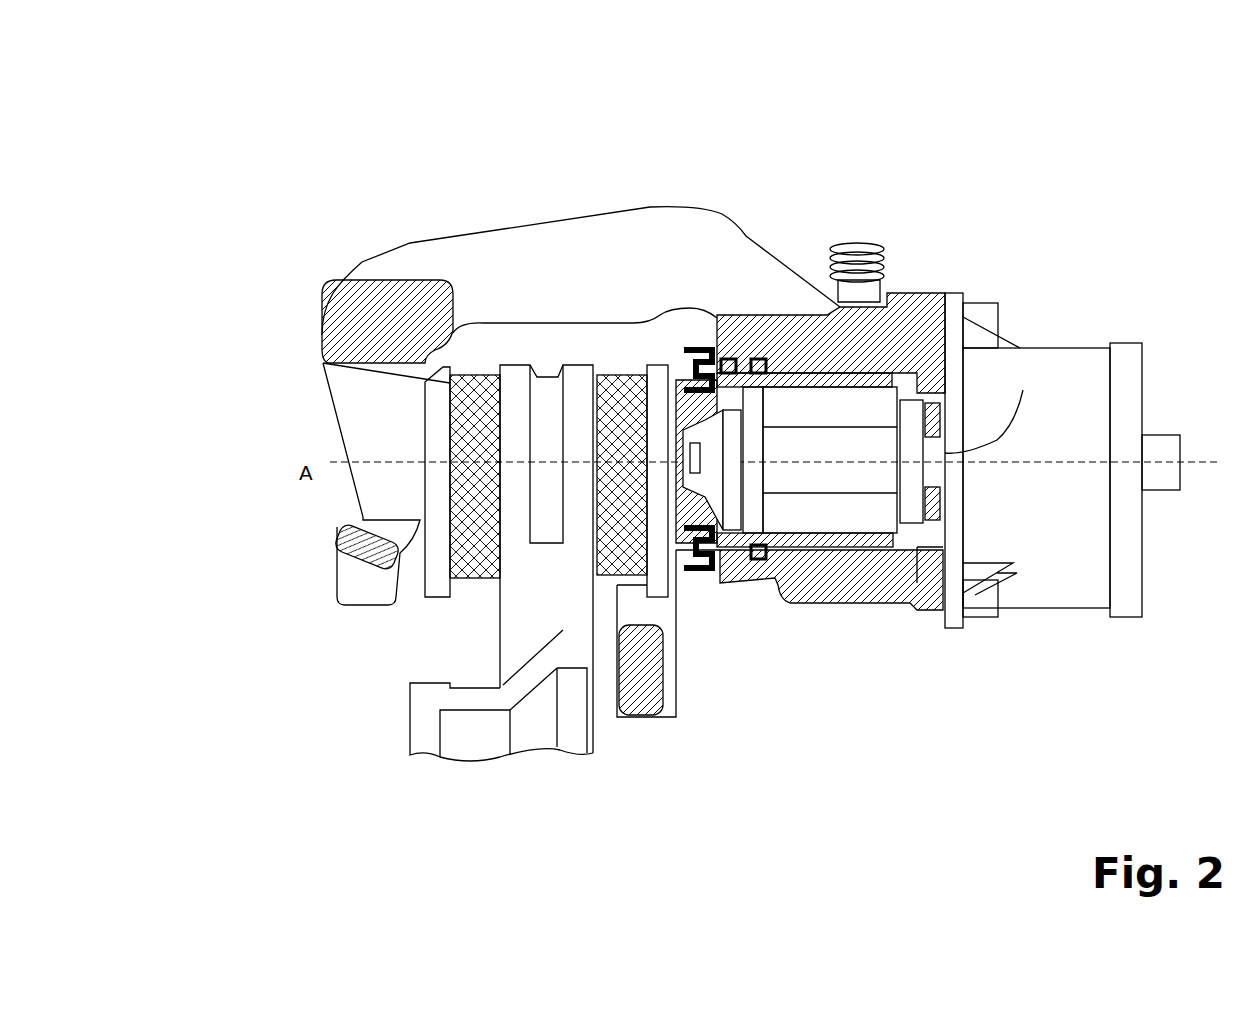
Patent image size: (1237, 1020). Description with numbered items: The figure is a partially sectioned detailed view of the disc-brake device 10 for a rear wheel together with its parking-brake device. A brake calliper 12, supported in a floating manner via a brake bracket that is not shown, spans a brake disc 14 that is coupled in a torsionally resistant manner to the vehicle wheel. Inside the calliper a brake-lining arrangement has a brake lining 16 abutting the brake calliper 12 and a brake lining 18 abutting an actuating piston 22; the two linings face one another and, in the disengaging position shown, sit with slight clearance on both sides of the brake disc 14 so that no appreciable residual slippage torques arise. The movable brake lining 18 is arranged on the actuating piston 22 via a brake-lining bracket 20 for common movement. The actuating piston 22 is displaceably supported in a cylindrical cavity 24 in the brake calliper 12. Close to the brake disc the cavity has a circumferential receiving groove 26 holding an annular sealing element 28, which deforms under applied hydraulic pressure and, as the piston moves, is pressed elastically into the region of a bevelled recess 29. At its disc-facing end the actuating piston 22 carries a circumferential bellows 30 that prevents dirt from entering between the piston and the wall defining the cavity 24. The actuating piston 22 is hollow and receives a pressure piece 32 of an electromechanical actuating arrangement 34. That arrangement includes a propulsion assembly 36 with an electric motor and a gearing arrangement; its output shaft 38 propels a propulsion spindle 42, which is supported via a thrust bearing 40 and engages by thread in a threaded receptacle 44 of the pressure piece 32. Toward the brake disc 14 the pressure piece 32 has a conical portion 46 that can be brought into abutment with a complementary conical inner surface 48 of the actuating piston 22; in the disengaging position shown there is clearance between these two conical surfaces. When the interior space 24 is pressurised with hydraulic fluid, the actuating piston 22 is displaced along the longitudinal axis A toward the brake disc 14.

The disc-brake device 10 is at (1022, 217).
The brake calliper 12 is at (497, 250).
The brake disc 14 is at (505, 615).
The brake lining 16 is at (323, 363).
The brake lining 18 is at (612, 375).
The brake-lining bracket 20 is at (657, 365).
The actuating piston 22 is at (812, 315).
The cylindrical cavity 24 is at (917, 393).
The receiving groove 26 is at (760, 560).
The sealing element 28 is at (755, 562).
The bevelled recess 29 is at (748, 360).
The bellows 30 is at (697, 577).
The pressure piece 32 is at (872, 412).
The electromechanical actuating arrangement 34 is at (1112, 343).
The propulsion assembly 36 is at (1080, 573).
The output shaft 38 is at (1023, 390).
The thrust bearing 40 is at (950, 297).
The propulsion spindle 42 is at (945, 497).
The threaded receptacle 44 is at (837, 443).
The conical portion 46 is at (708, 348).
The conical inner surface 48 is at (700, 345).